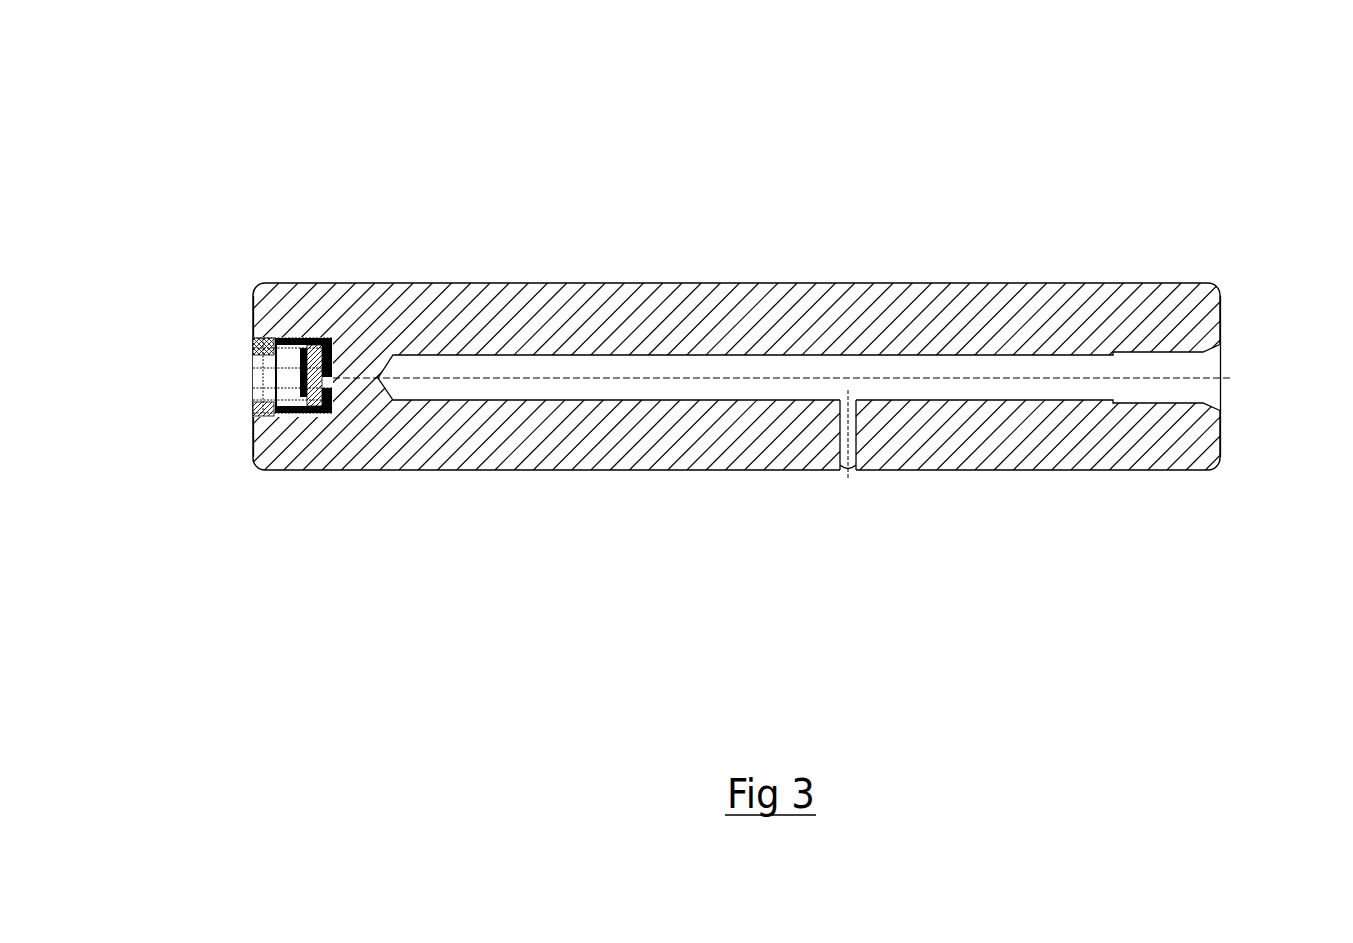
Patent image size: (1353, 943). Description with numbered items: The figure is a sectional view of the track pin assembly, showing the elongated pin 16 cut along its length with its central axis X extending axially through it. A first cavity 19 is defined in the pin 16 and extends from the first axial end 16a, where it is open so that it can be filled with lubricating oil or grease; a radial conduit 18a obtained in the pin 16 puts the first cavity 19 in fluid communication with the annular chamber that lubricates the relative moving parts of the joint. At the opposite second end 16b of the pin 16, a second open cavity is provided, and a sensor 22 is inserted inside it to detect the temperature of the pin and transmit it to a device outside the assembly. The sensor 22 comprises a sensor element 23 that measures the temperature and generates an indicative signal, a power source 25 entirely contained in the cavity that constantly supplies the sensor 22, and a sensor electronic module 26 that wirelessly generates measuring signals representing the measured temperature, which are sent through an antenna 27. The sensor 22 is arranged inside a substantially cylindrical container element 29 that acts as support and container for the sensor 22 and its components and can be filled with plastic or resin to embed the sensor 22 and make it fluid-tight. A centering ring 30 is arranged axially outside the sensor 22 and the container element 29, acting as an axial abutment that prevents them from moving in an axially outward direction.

The pin 16 is at (862, 290).
The first axial end 16a is at (1215, 313).
The second end 16b is at (252, 305).
The radial conduit 18a is at (848, 430).
The first cavity 19 is at (990, 378).
The sensor 22 is at (265, 380).
The sensor element 23 is at (332, 378).
The power source 25 is at (305, 338).
The sensor electronic module 26 is at (305, 405).
The antenna 27 is at (287, 338).
The container element 29 is at (329, 352).
The centering ring 30 is at (253, 412).
The central axis X is at (1227, 377).